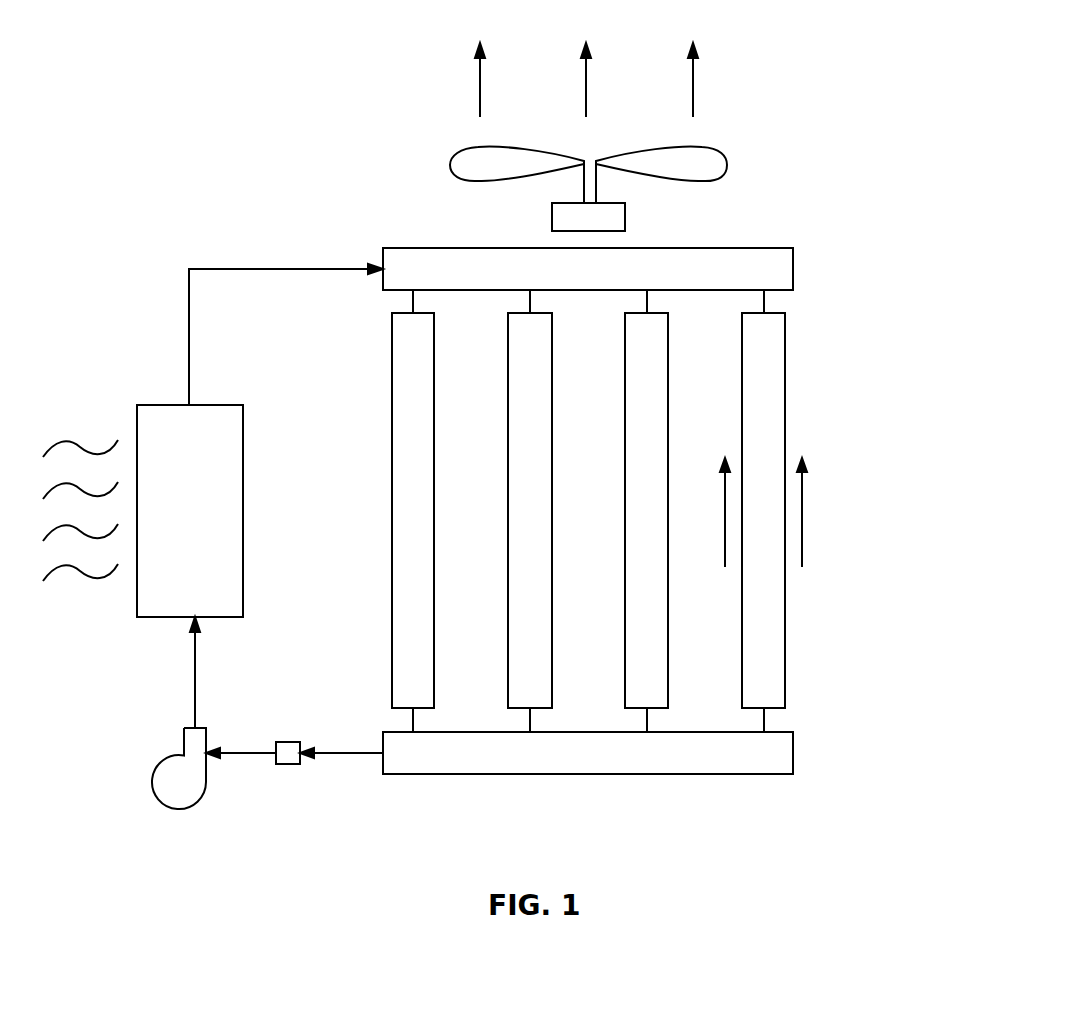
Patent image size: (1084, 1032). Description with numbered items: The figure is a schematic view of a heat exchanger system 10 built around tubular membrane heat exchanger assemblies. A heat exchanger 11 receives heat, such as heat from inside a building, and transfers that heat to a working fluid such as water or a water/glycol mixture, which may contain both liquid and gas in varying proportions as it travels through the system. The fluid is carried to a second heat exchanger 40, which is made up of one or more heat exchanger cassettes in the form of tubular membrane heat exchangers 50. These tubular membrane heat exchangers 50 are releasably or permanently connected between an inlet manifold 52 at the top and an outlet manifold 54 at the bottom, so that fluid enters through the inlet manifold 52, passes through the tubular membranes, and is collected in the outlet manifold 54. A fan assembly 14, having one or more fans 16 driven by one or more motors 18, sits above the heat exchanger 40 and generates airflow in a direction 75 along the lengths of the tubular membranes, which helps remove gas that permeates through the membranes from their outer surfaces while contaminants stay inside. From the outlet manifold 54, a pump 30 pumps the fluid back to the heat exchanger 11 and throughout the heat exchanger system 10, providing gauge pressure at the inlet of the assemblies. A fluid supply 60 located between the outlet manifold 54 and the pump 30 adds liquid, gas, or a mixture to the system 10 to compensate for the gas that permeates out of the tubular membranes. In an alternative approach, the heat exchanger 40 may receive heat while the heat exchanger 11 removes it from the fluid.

The heat exchanger system 10 is at (505, 449).
The heat exchanger 11 is at (157, 413).
The fan assembly 14 is at (670, 137).
The fan 16 is at (724, 167).
The motor 18 is at (625, 222).
The pump 30 is at (178, 788).
The heat exchanger 40 is at (636, 513).
The tubular membrane heat exchanger 50 is at (765, 640).
The inlet manifold 52 is at (420, 248).
The outlet manifold 54 is at (486, 774).
The fluid supply 60 is at (285, 764).
The direction 75 is at (805, 516).